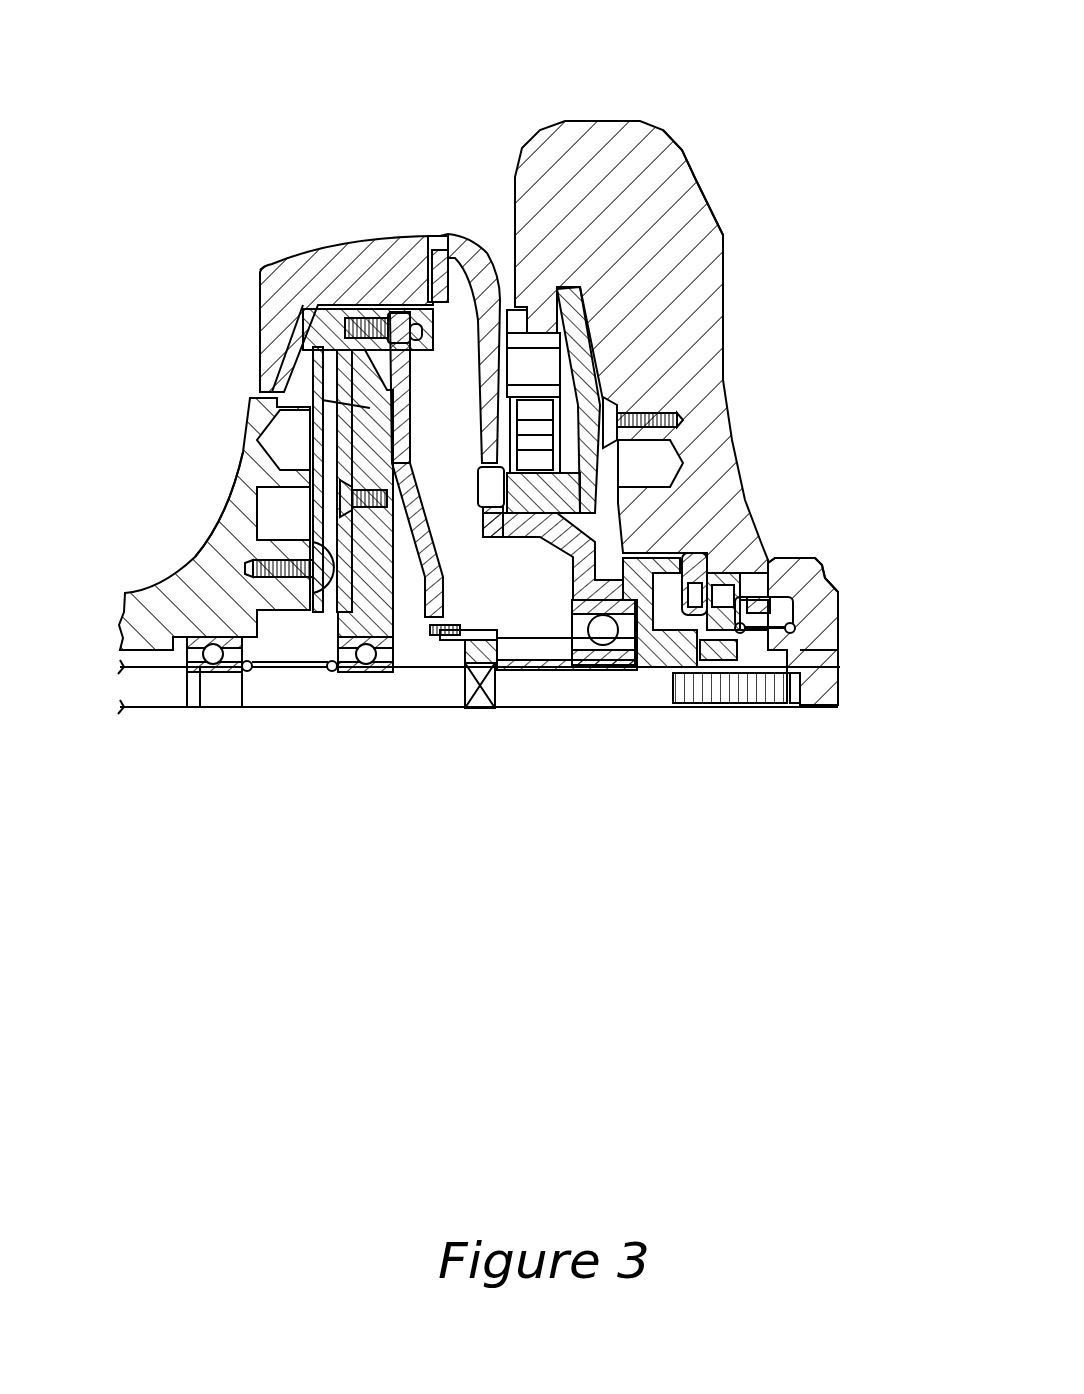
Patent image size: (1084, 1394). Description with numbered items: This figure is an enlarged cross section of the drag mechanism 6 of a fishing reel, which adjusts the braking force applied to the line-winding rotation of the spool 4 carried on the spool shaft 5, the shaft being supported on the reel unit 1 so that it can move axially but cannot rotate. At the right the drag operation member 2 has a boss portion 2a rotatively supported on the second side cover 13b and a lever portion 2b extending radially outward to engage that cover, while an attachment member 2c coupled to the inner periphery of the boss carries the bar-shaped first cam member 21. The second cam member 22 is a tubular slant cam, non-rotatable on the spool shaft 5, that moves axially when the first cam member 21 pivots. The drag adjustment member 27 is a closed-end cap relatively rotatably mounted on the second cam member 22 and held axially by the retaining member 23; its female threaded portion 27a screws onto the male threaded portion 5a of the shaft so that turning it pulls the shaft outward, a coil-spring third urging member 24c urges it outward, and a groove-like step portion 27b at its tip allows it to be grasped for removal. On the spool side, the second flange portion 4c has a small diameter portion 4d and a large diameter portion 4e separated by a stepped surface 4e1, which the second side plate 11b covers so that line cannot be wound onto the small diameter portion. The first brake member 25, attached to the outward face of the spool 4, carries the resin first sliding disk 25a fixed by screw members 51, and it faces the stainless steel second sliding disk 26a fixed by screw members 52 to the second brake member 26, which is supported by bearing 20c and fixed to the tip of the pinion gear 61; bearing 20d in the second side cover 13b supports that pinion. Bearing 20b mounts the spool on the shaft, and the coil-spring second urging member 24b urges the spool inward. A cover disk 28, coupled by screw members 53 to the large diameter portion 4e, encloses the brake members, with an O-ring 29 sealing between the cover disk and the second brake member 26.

The reel unit 1 is at (400, 132).
The drag operation member 2 is at (635, 140).
The boss portion 2a is at (687, 537).
The lever portion 2b is at (700, 205).
The attachment member 2c is at (660, 600).
The spool 4 is at (140, 580).
The second flange portion 4c is at (243, 452).
The small diameter portion 4d is at (257, 380).
The large diameter portion 4e is at (357, 317).
The stepped surface 4e1 is at (273, 383).
The spool shaft 5 is at (790, 694).
The male threaded portion 5a is at (793, 657).
The drag mechanism 6 is at (560, 333).
The second side plate 11b is at (347, 247).
The second side cover 13b is at (437, 247).
The bearing 20b is at (213, 664).
The bearing 20c is at (367, 664).
The bearing 20d is at (603, 645).
The first cam member 21 is at (727, 572).
The second cam member 22 is at (767, 573).
The retaining member 23 is at (797, 603).
The second urging member 24b is at (295, 667).
The third urging member 24c is at (767, 627).
The first brake member 25 is at (287, 390).
The first sliding disk 25a is at (322, 400).
The second brake member 26 is at (320, 333).
The second sliding disk 26a is at (317, 377).
The drag adjustment member 27 is at (828, 553).
The female threaded portion 27a is at (767, 668).
The step portion 27b is at (780, 573).
The cover disk 28 is at (415, 495).
The O-ring 29 is at (450, 620).
The screw member 51 is at (385, 567).
The screw member 52 is at (347, 500).
The screw member 53 is at (430, 387).
The pinion gear 61 is at (535, 650).